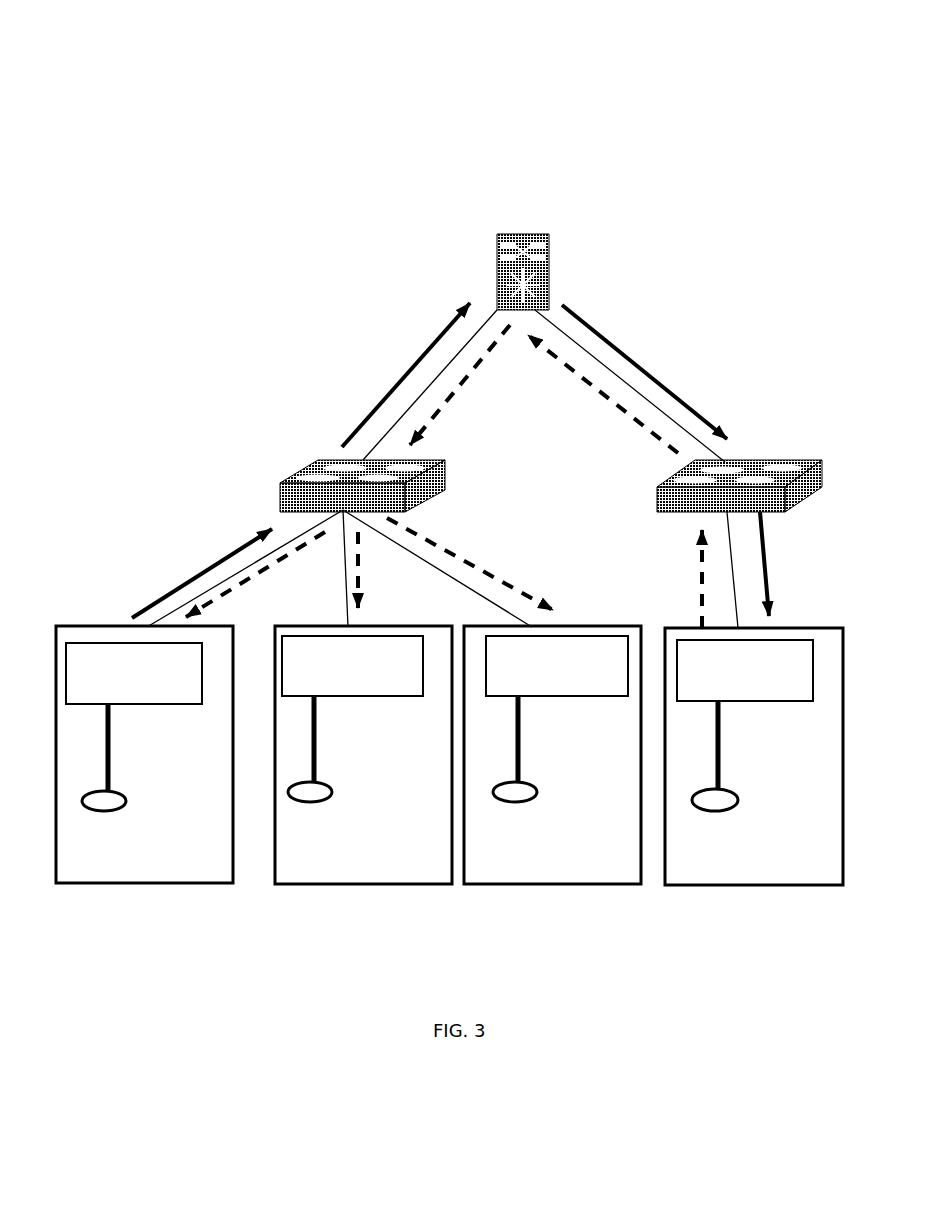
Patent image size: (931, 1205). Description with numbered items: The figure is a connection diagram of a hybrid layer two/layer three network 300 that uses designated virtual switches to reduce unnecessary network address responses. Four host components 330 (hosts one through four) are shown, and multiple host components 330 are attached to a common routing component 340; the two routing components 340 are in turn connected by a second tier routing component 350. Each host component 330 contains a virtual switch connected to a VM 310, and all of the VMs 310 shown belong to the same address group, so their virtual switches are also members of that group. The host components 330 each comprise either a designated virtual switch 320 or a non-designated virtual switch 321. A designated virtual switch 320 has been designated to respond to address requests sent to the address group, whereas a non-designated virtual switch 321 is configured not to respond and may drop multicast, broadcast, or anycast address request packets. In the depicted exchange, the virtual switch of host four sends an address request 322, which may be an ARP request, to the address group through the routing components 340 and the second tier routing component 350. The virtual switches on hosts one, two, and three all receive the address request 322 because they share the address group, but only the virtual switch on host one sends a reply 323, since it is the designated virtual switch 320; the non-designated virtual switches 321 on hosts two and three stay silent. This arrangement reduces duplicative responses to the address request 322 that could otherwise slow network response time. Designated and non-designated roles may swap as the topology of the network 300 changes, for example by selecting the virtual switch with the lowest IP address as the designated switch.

The hybrid layer 2/layer 3 network 300 is at (385, 116).
The second tier routing component 350 is at (517, 232).
The routing component 340 is at (310, 470).
The reply 323 is at (197, 575).
The address request 322 is at (700, 585).
The designated virtual switch 320 is at (180, 705).
The non-designated virtual switch 321 is at (371, 697).
The VM 310 is at (100, 812).
The host component 330 is at (88, 883).